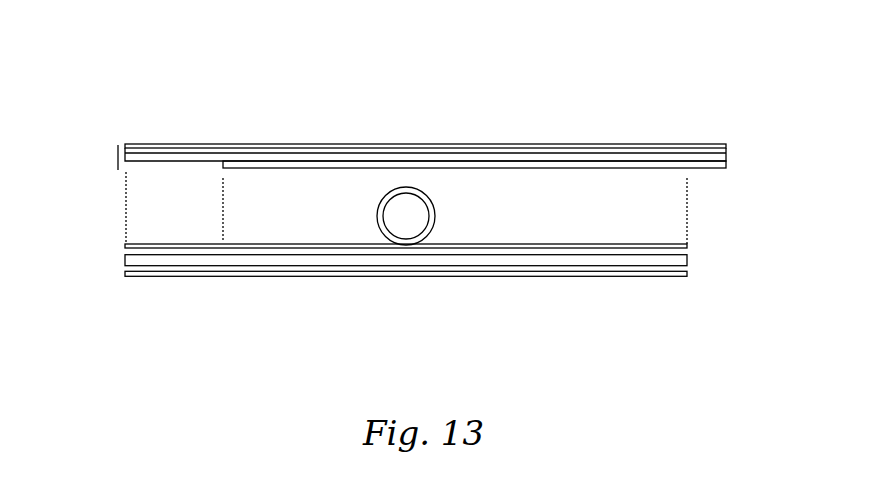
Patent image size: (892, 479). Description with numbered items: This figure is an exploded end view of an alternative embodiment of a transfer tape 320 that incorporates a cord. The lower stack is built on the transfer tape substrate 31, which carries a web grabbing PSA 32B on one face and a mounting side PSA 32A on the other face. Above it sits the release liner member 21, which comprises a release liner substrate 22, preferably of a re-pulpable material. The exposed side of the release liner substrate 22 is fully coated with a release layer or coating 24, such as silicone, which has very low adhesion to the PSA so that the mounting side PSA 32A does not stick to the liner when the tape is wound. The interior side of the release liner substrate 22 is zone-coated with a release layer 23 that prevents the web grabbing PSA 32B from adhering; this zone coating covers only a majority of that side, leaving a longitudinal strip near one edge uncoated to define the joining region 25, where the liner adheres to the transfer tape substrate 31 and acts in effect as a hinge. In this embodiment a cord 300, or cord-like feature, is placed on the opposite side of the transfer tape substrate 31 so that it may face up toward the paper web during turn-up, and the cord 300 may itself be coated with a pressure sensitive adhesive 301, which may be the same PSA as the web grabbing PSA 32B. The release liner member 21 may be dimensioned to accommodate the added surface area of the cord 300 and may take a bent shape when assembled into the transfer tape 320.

The release liner member 21 is at (117, 160).
The release liner substrate 22 is at (727, 157).
The zone-coated release layer 23 is at (710, 170).
The release layer or coating 24 is at (650, 145).
The uncoated joining region 25 is at (133, 226).
The cord 300 is at (406, 208).
The pressure sensitive adhesive 301 is at (428, 186).
The transfer tape substrate 31 is at (688, 263).
The mounting side PSA 32A is at (670, 282).
The web grabbing PSA 32B is at (688, 248).
The transfer tape 320 is at (184, 300).